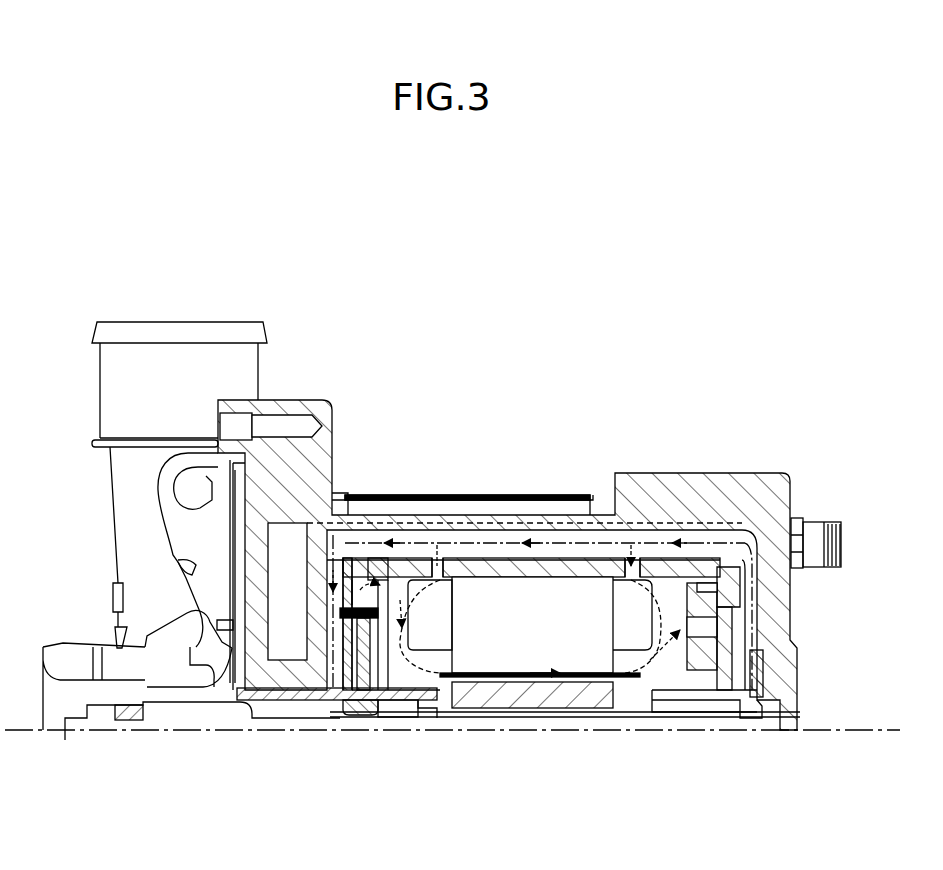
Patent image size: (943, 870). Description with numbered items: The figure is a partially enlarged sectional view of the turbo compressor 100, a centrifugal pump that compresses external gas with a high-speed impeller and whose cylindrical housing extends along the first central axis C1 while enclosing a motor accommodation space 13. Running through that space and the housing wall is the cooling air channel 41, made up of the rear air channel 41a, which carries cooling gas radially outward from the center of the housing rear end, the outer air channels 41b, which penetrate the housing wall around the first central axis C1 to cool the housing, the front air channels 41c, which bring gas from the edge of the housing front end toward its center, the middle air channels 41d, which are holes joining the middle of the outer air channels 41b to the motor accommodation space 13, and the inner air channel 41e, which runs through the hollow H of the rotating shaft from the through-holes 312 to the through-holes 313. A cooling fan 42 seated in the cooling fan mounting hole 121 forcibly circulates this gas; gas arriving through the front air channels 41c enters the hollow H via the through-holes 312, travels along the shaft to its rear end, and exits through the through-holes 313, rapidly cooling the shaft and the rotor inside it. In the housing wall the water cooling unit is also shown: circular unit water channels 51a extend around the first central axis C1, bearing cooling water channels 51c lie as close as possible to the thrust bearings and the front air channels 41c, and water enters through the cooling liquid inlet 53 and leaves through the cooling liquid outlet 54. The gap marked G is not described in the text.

The turbo compressor 100 is at (213, 262).
The cooling air channel 41 is at (507, 565).
The rear air channel 41a is at (762, 613).
The outer air channels 41b is at (567, 550).
The front air channels 41c is at (336, 560).
The middle air channels 41d is at (683, 625).
The inner air channel 41e is at (410, 716).
The cooling fan 42 is at (757, 702).
The unit water channels 51a is at (424, 525).
The bearing cooling water channels 51c is at (284, 657).
The cooling liquid inlet 53 is at (811, 520).
The cooling liquid outlet 54 is at (838, 568).
The cooling fan mounting hole 121 is at (767, 667).
The motor accommodation space 13 is at (630, 660).
The through-holes 312 is at (332, 703).
The through-holes 313 is at (744, 714).
The gap G is at (525, 543).
The hollow H is at (397, 712).
The first central axis C1 is at (810, 733).